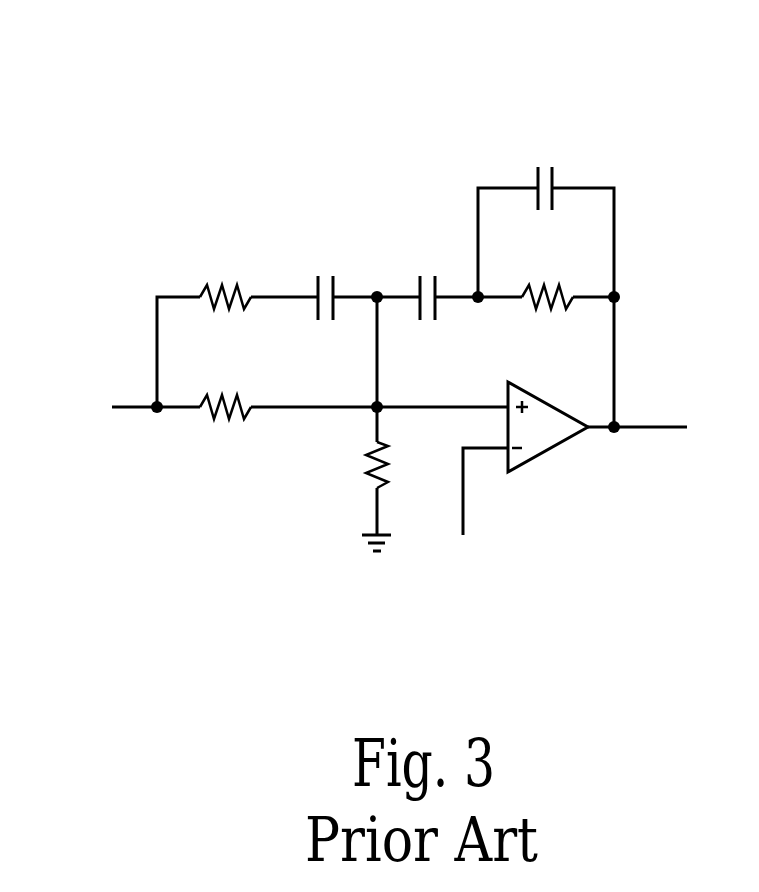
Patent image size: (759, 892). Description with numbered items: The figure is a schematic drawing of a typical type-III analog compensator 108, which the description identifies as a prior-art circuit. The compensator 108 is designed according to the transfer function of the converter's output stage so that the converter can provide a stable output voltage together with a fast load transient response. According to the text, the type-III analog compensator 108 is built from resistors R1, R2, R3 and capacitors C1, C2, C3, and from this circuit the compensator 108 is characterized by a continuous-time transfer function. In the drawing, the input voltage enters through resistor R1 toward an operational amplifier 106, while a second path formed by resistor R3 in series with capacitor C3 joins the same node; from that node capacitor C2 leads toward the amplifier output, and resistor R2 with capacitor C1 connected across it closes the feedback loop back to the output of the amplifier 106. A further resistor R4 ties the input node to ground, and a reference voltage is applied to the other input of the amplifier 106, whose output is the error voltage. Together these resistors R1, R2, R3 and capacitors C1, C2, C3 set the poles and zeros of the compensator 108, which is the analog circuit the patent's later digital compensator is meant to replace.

The compensator 108 is at (105, 112).
The operational amplifier 106 is at (548, 451).
The resistor R1 is at (225, 387).
The resistor R2 is at (547, 278).
The resistor R3 is at (225, 277).
The resistor R4 is at (351, 465).
The capacitor C1 is at (546, 210).
The capacitor C2 is at (429, 277).
The capacitor C3 is at (327, 277).